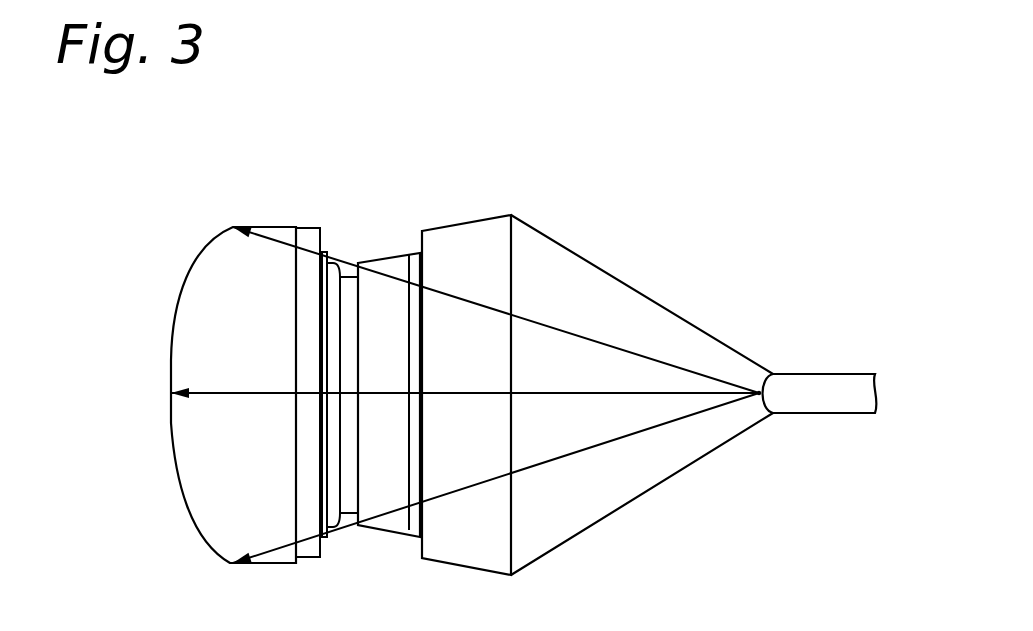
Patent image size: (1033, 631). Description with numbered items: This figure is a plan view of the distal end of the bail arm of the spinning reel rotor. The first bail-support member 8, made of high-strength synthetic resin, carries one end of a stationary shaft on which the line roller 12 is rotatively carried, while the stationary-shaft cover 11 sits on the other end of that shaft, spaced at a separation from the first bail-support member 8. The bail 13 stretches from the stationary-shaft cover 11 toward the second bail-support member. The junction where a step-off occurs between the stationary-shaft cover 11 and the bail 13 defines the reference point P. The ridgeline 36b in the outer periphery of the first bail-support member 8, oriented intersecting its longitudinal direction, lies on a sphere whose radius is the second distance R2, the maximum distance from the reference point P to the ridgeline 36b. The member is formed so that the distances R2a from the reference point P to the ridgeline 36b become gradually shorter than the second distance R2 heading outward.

The first bail-support member 8 is at (198, 302).
The ridgeline 36b is at (133, 398).
The line roller 12 is at (395, 268).
The stationary-shaft cover 11 is at (565, 268).
The bail 13 is at (836, 383).
The reference point P is at (764, 405).
The second distance R2 is at (465, 378).
The distance R2a is at (496, 395).